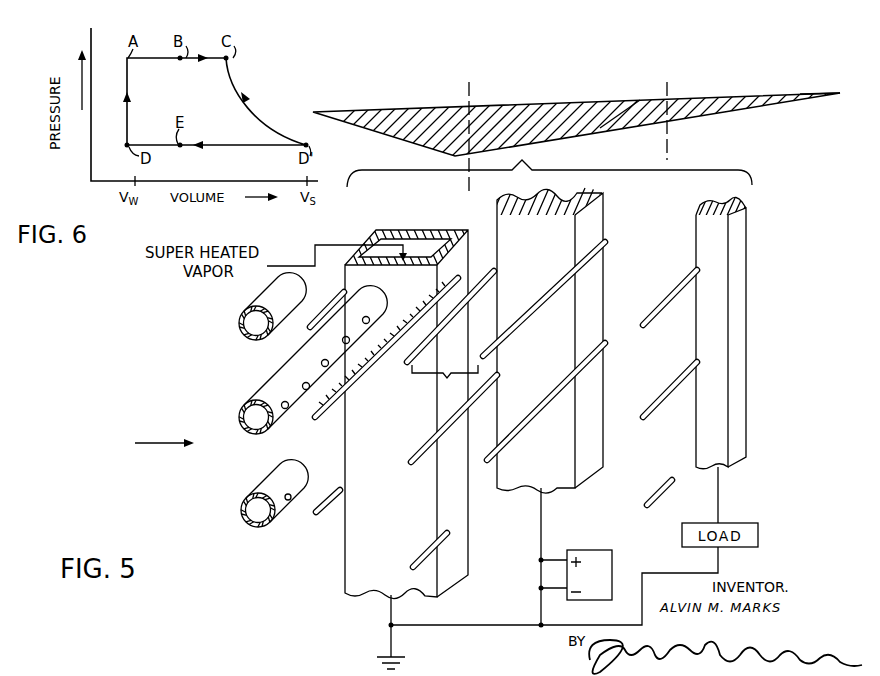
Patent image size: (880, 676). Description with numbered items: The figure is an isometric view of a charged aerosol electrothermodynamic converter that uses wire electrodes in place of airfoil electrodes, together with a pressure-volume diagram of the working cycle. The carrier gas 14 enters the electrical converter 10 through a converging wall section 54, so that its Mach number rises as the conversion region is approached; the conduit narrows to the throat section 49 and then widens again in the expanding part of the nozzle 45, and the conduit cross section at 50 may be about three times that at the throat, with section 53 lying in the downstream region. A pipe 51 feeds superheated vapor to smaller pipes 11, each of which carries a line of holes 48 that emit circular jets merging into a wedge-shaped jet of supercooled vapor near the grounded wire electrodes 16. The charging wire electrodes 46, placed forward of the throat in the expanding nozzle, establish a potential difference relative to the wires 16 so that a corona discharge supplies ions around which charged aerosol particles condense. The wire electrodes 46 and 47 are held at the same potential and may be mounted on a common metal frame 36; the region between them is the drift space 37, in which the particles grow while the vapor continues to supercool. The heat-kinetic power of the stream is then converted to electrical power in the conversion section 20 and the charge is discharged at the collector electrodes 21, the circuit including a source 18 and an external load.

The electrical converter 10 is at (522, 161).
The pipes 11 is at (240, 337).
The carrier gas 14 is at (166, 418).
The wire electrodes 16 is at (323, 414).
The exciter battery 18 is at (576, 558).
The conversion section 20 is at (689, 332).
The collector electrodes 21 is at (658, 307).
The metal frame 36 is at (567, 340).
The drift space 37 is at (446, 383).
The expanding part of the nozzle 45 is at (620, 107).
The charging wire electrodes 46 is at (482, 257).
The wire electrodes 47 is at (551, 306).
The holes 48 is at (295, 408).
The throat section 49 is at (469, 130).
The conduit cross section 50 is at (820, 93).
The pipe 51 is at (393, 233).
The collector section 53 is at (689, 113).
The converging wall section 54 is at (423, 110).